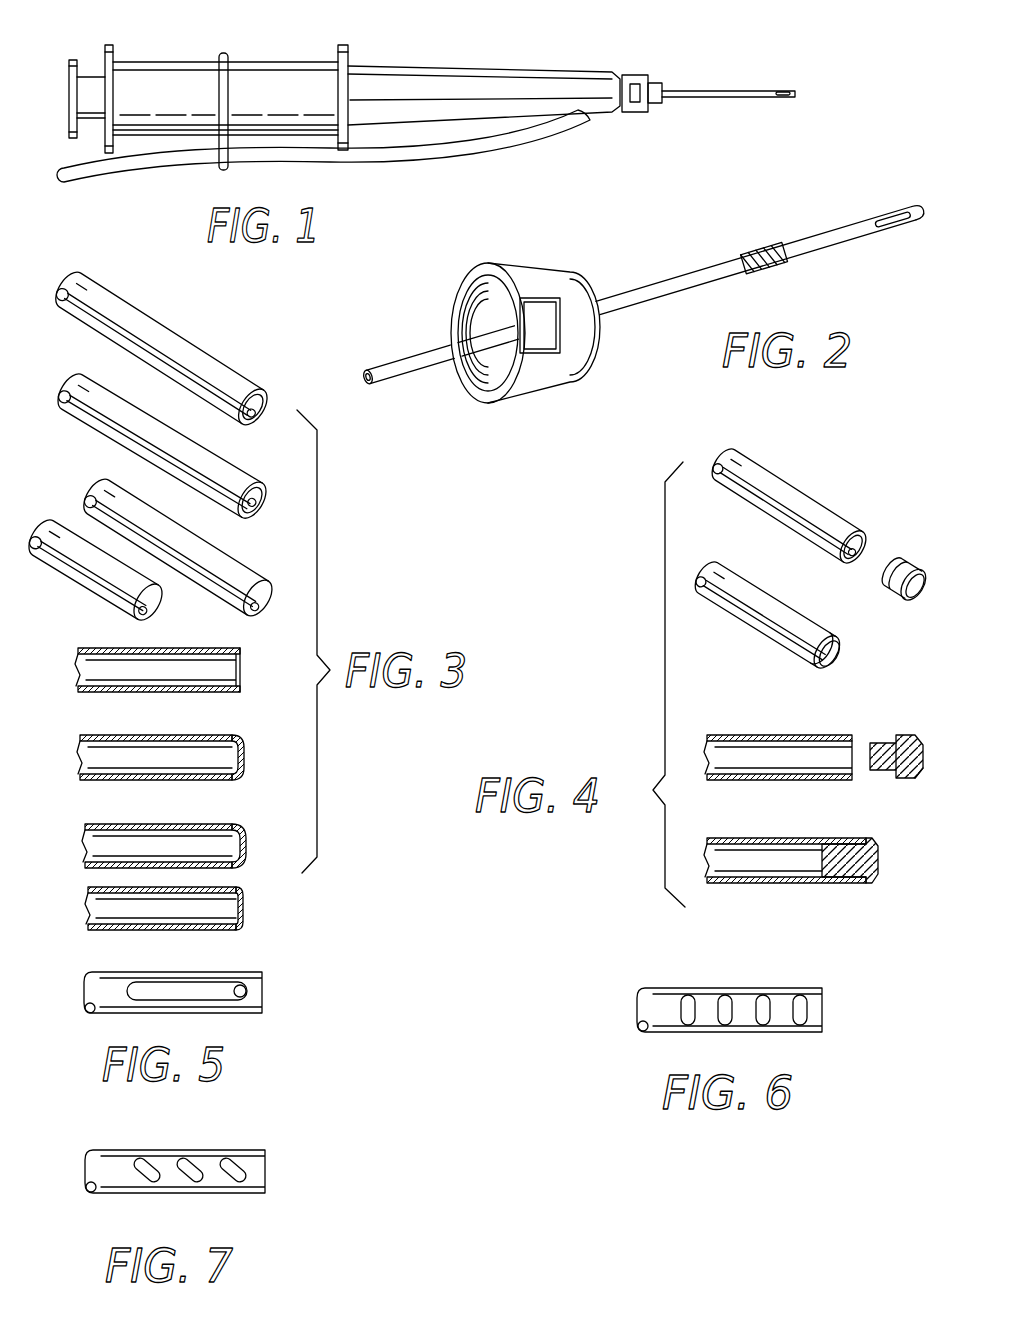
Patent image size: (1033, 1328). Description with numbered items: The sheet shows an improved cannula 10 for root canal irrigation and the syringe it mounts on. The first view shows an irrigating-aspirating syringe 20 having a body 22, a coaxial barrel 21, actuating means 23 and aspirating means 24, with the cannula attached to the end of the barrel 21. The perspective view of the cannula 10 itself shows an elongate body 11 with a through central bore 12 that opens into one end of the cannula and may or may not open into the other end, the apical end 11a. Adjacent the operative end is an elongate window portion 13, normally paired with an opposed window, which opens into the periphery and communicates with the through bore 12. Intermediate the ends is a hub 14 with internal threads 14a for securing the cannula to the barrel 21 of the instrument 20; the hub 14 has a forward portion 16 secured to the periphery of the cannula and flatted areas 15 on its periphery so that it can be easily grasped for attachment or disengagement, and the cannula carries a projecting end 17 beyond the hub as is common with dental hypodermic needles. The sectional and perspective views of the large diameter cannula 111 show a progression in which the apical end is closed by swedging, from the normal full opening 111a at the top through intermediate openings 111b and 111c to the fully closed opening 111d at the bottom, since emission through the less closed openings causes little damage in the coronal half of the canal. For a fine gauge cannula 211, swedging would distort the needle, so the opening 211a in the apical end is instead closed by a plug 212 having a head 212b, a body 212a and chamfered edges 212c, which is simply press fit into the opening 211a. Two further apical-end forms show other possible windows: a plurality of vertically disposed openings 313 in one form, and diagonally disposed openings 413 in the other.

In FIG. 2, the cannula 10 is at (690, 263).
In FIG. 2, the elongate body 11 is at (630, 292).
In FIG. 5, the elongate body 11 is at (228, 972).
In FIG. 1, the apical end 11a is at (795, 95).
In FIG. 2, the apical end 11a is at (938, 210).
In FIG. 2, the central bore 12 is at (770, 258).
In FIG. 1, the window portion 13 is at (780, 90).
In FIG. 2, the window portion 13 is at (898, 222).
In FIG. 5, the window portion 13 is at (247, 990).
In FIG. 2, the hub 14 is at (520, 270).
In FIG. 2, the internal threads 14a is at (465, 312).
In FIG. 2, the flatted areas 15 is at (538, 300).
In FIG. 2, the forward portion 16 is at (598, 345).
In FIG. 2, the projecting end 17 is at (418, 375).
In FIG. 1, the syringe 20 is at (512, 64).
In FIG. 1, the barrel 21 is at (403, 88).
In FIG. 1, the body 22 is at (265, 66).
In FIG. 1, the actuating means 23 is at (73, 70).
In FIG. 1, the aspirating means 24 is at (440, 160).
In FIG. 3, the cannula 111 is at (200, 360).
In FIG. 3, the full opening 111a is at (270, 405).
In FIG. 3, the partially closed opening 111b is at (262, 502).
In FIG. 3, the partially closed opening 111c is at (270, 600).
In FIG. 3, the fully closed opening 111d is at (155, 608).
In FIG. 4, the fine gauge cannula 211 is at (800, 488).
In FIG. 4, the opening 211a is at (848, 560).
In FIG. 4, the plug 212 is at (920, 600).
In FIG. 4, the body 212a is at (887, 770).
In FIG. 4, the head 212b is at (923, 752).
In FIG. 4, the chamfered edges 212c is at (918, 776).
In FIG. 6, the vertically disposed openings 313 is at (763, 1003).
In FIG. 7, the diagonally disposed openings 413 is at (233, 1165).